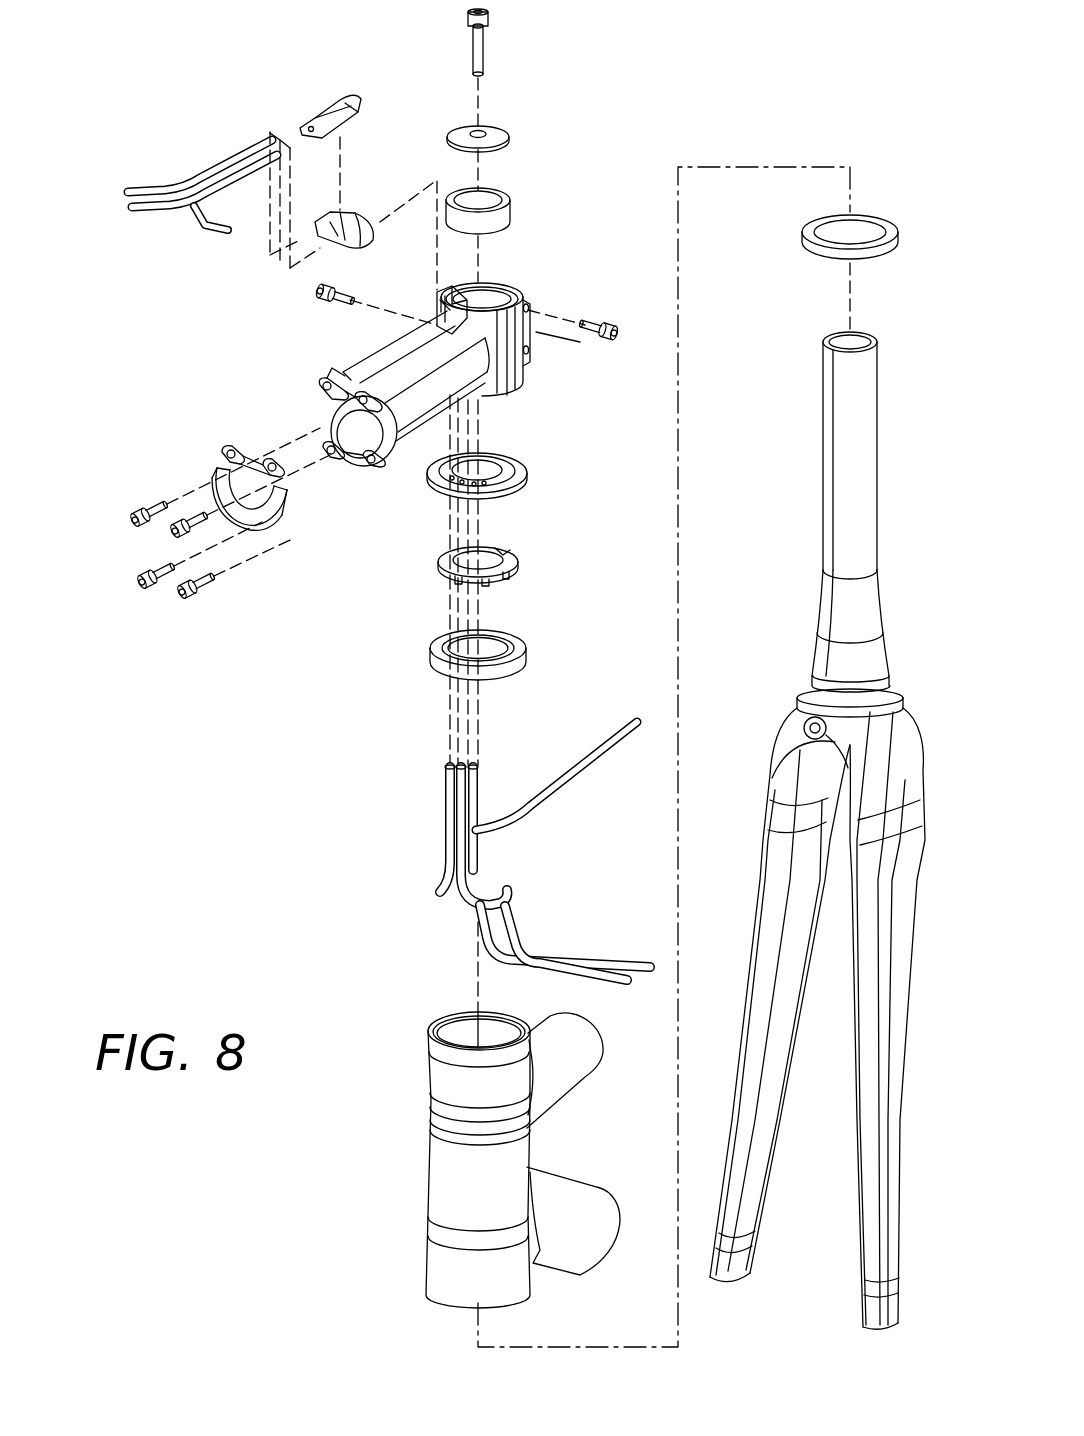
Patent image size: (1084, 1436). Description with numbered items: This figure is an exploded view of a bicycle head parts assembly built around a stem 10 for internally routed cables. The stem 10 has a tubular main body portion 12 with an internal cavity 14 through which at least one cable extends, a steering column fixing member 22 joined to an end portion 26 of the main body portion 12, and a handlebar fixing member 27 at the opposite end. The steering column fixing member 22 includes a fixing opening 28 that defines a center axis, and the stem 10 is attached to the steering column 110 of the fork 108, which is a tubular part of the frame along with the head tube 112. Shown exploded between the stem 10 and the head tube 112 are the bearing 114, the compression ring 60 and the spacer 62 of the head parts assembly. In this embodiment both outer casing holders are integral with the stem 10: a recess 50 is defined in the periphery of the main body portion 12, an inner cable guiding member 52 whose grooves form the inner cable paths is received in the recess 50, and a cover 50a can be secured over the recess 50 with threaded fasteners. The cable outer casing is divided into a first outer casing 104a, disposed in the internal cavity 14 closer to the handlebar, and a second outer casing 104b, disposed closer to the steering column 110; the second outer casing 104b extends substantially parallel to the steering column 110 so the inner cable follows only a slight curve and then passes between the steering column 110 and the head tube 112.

The stem 10 is at (236, 383).
The main body portion 12 is at (386, 360).
The internal cavity 14 is at (356, 442).
The steering column fixing member 22 is at (512, 288).
The end portion 26 is at (487, 350).
The handlebar fixing member 27 is at (245, 520).
The fixing opening 28 is at (488, 294).
The recess 50 is at (428, 322).
The cover 50a is at (325, 118).
The inner cable guiding member 52 is at (352, 217).
The compression ring 60 is at (520, 562).
The spacer 62 is at (528, 478).
The first outer casing 104a is at (233, 168).
The second outer casing 104b is at (466, 840).
The fork 108 is at (780, 870).
The steering column 110 is at (825, 455).
The head tube 112 is at (447, 1170).
The bearing 114 is at (430, 652).